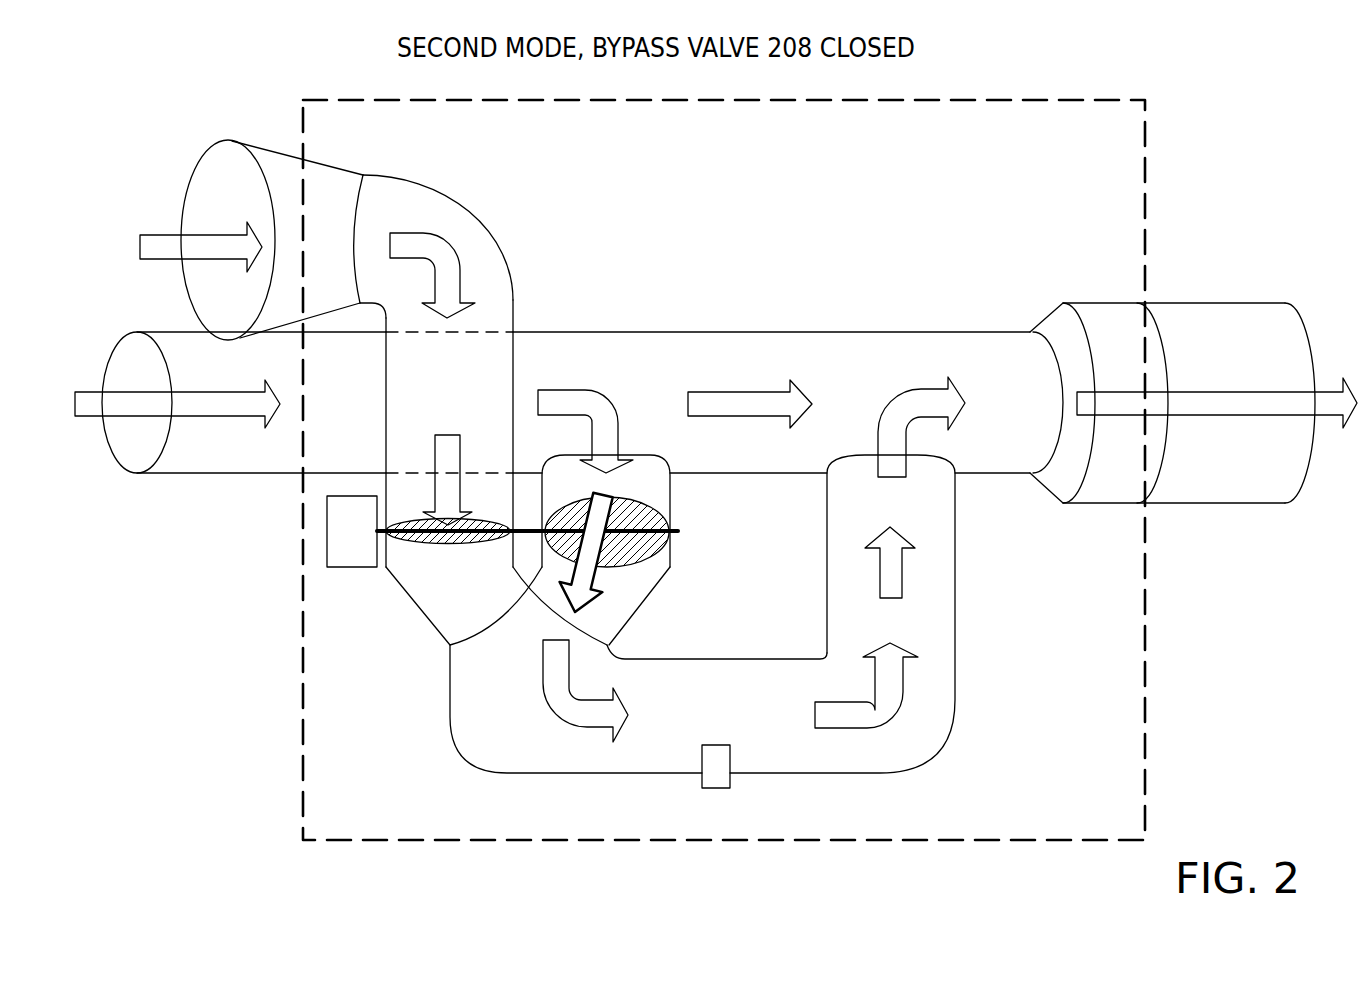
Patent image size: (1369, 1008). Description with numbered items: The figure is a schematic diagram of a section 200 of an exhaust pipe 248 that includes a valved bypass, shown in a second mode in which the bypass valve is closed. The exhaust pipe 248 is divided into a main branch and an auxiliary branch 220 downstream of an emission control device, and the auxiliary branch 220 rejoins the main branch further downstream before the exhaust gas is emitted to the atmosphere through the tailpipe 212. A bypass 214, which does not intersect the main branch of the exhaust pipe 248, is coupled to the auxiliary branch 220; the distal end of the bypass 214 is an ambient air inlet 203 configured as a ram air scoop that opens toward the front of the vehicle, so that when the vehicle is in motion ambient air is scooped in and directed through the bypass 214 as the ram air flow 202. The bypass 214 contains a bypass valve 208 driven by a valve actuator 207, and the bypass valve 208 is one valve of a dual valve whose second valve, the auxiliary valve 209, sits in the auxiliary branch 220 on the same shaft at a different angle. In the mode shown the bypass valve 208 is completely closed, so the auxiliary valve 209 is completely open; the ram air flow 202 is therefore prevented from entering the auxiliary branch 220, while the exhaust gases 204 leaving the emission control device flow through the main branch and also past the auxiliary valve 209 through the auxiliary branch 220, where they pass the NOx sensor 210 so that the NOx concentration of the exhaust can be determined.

The section of exhaust pipe 200 is at (897, 98).
The ram air flow 202 is at (138, 243).
The ambient air inlet 203 is at (265, 145).
The exhaust gases 204 is at (85, 397).
The valve actuator 207 is at (327, 532).
The bypass valve 208 is at (435, 545).
The auxiliary valve 209 is at (645, 565).
The NOx sensor 210 is at (715, 788).
The tailpipe 212 is at (1195, 303).
The bypass 214 is at (515, 362).
The auxiliary branch 220 is at (940, 745).
The exhaust pipe 248 is at (235, 473).